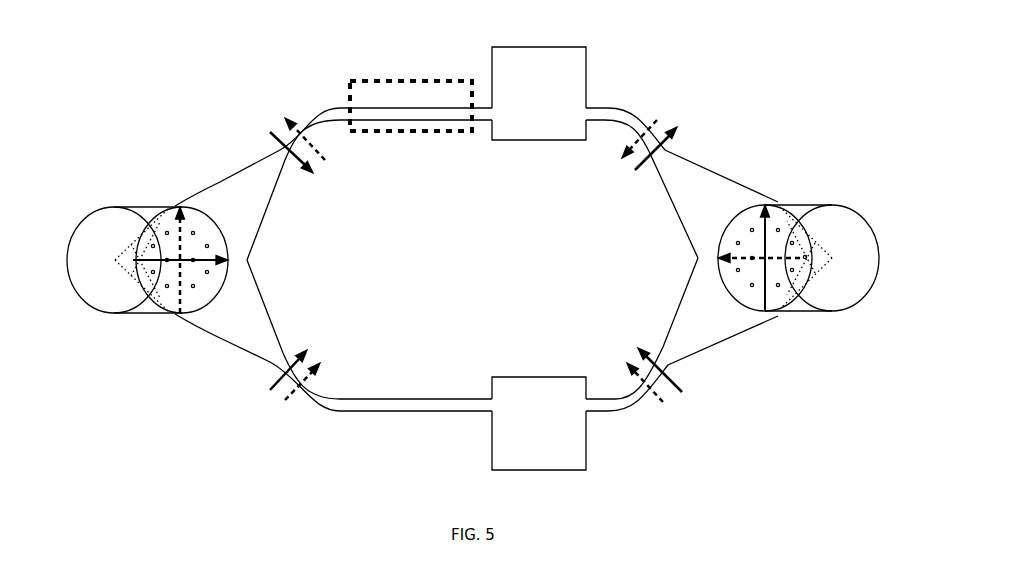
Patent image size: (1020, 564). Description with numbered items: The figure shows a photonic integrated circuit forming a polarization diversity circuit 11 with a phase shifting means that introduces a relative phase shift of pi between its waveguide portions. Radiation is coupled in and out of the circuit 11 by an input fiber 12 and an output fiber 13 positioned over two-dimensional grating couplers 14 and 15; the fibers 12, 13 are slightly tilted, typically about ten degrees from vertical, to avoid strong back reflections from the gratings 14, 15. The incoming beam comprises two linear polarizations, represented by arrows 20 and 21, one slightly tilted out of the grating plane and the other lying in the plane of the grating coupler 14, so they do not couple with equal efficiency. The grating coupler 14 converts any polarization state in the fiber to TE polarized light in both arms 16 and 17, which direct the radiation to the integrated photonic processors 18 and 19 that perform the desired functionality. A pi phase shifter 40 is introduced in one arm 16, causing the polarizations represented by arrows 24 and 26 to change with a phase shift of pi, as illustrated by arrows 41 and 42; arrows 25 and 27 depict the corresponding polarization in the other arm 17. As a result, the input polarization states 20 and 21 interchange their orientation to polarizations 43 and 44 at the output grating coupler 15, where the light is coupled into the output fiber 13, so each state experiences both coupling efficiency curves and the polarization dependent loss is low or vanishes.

The polarization diversity circuit 11 is at (208, 102).
The input fiber 12 is at (107, 294).
The output fiber 13 is at (845, 232).
The input two-dimensional grating coupler 14 is at (193, 288).
The output two-dimensional grating coupler 15 is at (739, 241).
The first waveguide arm 16 is at (332, 110).
The second waveguide arm 17 is at (360, 405).
The integrated photonic processor 18 is at (521, 83).
The integrated photonic processor 19 is at (527, 435).
The first input polarization 20 is at (148, 258).
The second input polarization 21 is at (178, 300).
The polarization arrow 24 is at (276, 135).
The first lower flow arrow 25 is at (279, 385).
The polarization arrow 26 is at (302, 132).
The first lower reverse flow arrow 27 is at (294, 392).
The pi phase shifter 40 is at (392, 98).
The phase-shifted polarization arrow 41 is at (660, 138).
The phase-shifted polarization arrow 42 is at (648, 132).
The output polarization 43 is at (769, 309).
The output polarization 44 is at (797, 256).